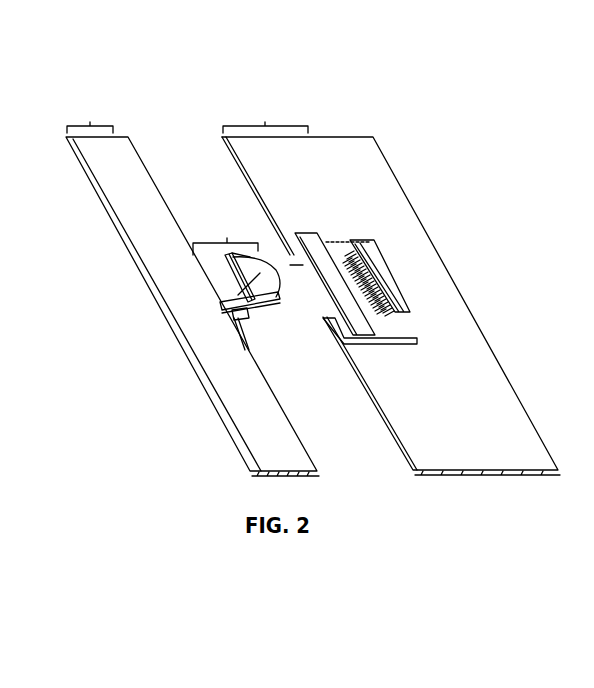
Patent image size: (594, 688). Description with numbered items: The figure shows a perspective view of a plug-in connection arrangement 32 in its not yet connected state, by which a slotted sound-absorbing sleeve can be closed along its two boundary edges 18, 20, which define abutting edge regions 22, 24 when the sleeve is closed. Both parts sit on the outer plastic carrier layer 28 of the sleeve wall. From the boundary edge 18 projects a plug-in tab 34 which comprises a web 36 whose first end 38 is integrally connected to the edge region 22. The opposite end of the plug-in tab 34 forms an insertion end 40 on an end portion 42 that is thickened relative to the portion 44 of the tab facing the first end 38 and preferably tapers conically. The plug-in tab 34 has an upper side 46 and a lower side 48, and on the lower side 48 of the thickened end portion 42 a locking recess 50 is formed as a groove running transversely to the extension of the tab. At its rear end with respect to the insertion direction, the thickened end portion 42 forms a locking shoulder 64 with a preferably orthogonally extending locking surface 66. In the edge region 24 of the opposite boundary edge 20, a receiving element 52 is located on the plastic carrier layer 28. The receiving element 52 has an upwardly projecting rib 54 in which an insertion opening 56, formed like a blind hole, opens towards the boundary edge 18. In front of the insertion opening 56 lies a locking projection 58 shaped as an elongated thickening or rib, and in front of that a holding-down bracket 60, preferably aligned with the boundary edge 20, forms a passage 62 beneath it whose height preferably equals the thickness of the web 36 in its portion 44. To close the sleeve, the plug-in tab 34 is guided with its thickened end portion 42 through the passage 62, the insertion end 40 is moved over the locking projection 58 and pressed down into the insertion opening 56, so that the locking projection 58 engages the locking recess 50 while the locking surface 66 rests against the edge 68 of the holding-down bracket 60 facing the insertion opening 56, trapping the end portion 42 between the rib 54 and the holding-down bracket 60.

The boundary edge 18 is at (139, 122).
The boundary edge 20 is at (210, 126).
The edge region 22 is at (90, 122).
The edge region 24 is at (265, 122).
The plastic carrier layer 28 is at (103, 165).
The plug-in connection arrangement 32 is at (312, 162).
The plug-in tab 34 is at (257, 333).
The web 36 is at (227, 238).
The first end 38 is at (222, 272).
The insertion end 40 is at (288, 306).
The end portion 42 is at (240, 333).
The portion 44 is at (257, 320).
The upper side 46 is at (327, 243).
The lower side 48 is at (288, 363).
The locking recess 50 is at (247, 462).
The receiving element 52 is at (423, 259).
The rib 54 is at (372, 265).
The insertion opening 56 is at (379, 278).
The locking projection 58 is at (398, 342).
The holding-down bracket 60 is at (372, 333).
The passage 62 is at (312, 285).
The locking shoulder 64 is at (219, 210).
The locking surface 66 is at (223, 259).
The edge 68 is at (270, 243).